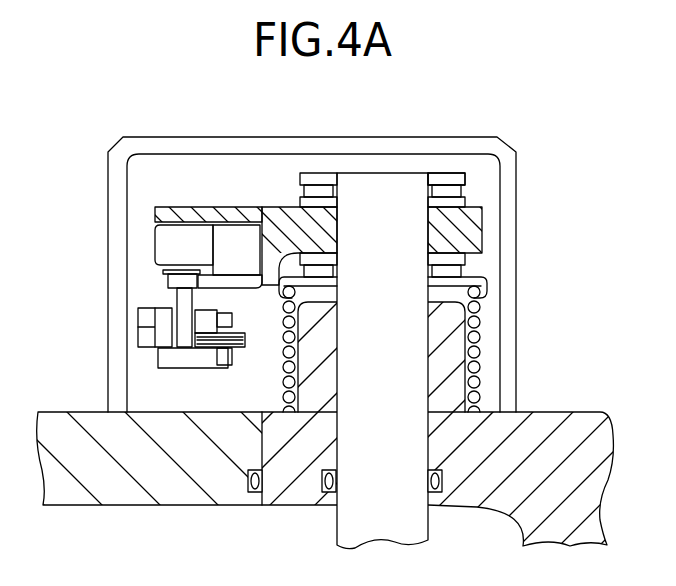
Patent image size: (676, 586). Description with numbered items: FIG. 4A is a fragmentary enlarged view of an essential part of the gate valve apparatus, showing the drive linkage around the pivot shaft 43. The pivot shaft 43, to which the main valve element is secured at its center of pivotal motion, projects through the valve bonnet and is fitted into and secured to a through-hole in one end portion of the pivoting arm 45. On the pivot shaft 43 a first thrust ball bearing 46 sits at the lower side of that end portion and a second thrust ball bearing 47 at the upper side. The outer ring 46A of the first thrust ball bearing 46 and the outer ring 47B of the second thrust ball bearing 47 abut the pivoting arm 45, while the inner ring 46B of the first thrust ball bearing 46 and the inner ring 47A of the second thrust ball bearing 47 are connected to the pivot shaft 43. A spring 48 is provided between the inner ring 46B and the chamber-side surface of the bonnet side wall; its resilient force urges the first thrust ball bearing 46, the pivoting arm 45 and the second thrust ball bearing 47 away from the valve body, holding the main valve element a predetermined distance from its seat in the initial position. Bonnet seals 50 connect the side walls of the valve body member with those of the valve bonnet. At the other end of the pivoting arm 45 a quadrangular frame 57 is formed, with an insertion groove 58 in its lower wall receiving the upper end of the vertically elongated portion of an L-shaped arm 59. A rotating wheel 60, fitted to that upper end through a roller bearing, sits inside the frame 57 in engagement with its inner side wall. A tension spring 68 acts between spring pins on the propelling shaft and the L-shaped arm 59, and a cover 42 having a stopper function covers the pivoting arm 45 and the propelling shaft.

The cover 42 is at (480, 138).
The pivot shaft 43 is at (400, 382).
The pivoting arm 45 is at (281, 215).
The first thrust ball bearing 46 is at (467, 268).
The outer ring of the first thrust ball bearing 46A is at (450, 242).
The inner ring of the first thrust ball bearing 46B is at (481, 283).
The second thrust ball bearing 47 is at (465, 188).
The inner ring of the second thrust ball bearing 47A is at (447, 178).
The outer ring of the second thrust ball bearing 47B is at (447, 203).
The spring 48 is at (479, 336).
The bonnet seal 50 is at (257, 494).
The quadrangular frame 57 is at (205, 207).
The insertion groove 58 is at (235, 288).
The L-shaped arm 59 is at (178, 302).
The rotating wheel 60 is at (177, 247).
The tension spring 68 is at (244, 350).